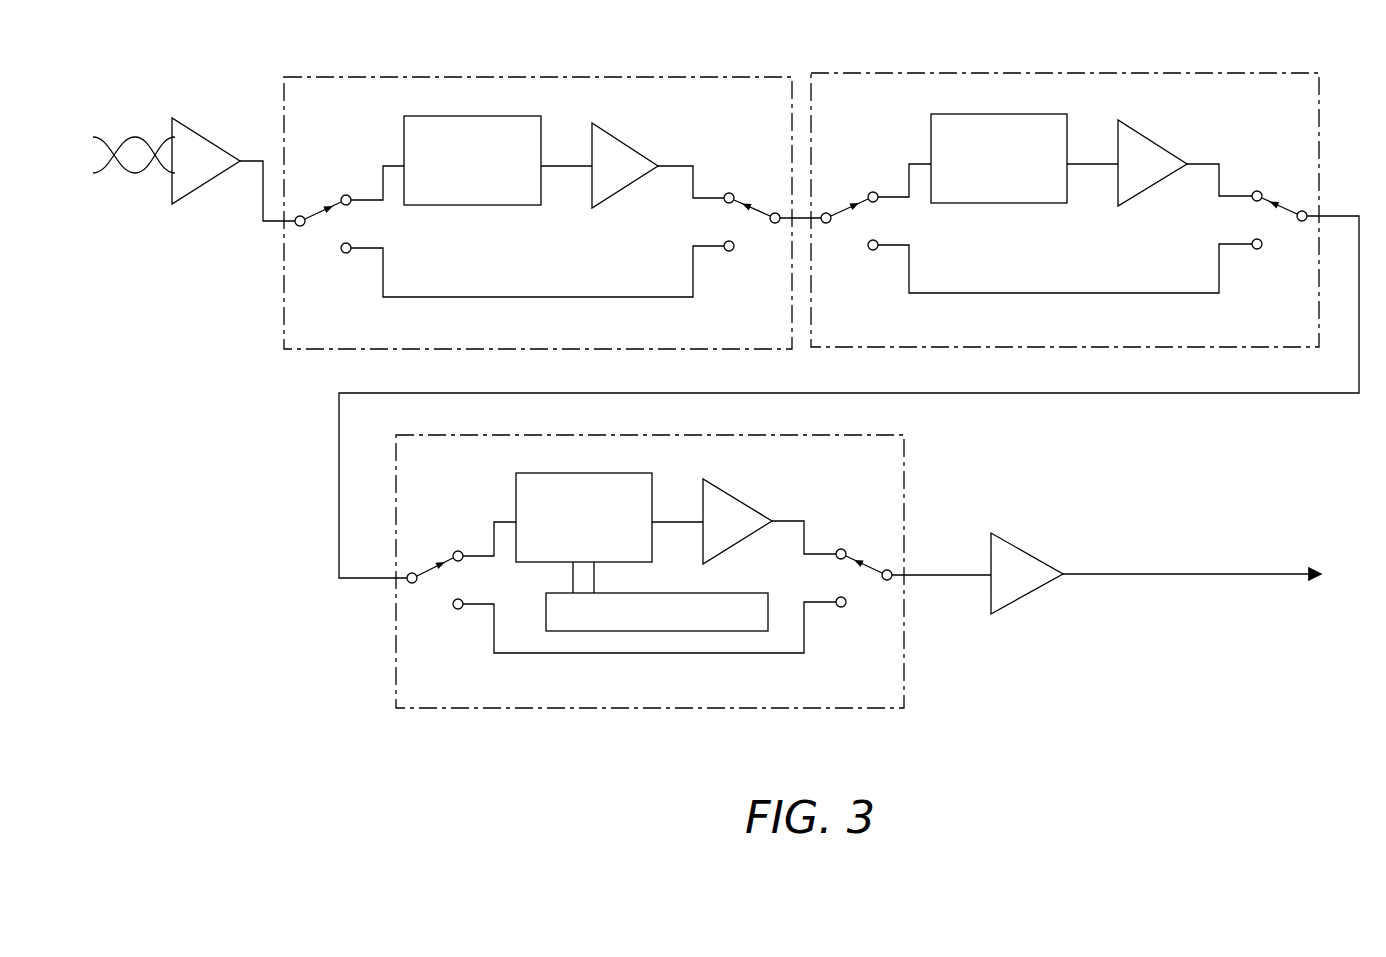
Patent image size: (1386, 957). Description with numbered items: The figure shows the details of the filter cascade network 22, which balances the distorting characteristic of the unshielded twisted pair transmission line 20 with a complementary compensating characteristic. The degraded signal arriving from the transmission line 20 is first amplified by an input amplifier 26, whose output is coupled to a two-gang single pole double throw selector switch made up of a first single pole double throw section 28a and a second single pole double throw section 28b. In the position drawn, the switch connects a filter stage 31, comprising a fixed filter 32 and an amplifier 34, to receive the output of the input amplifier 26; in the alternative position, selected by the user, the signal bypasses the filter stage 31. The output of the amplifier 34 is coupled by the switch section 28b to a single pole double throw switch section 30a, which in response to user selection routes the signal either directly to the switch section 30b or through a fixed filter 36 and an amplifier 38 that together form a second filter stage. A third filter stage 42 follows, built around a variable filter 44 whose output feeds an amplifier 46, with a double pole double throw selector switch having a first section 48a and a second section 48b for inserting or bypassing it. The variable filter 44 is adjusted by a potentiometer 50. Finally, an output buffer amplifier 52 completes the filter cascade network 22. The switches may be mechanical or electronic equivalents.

The unshielded twisted pair transmission line 20 is at (118, 113).
The input amplifier 26 is at (196, 116).
The filter stage 31 is at (320, 62).
The first single pole double throw section 28a is at (307, 258).
The second single pole double throw section 28b is at (768, 262).
The fixed filter 32 is at (462, 218).
The amplifier 34 is at (657, 144).
The filter cascade network 22 is at (846, 58).
The single pole double throw switch section 30a is at (833, 256).
The single pole double throw switch section 30b is at (1295, 260).
The fixed filter 36 is at (990, 218).
The amplifier 38 is at (1183, 143).
The third filter stage 42 is at (440, 718).
The variable filter 44 is at (500, 502).
The amplifier 46 is at (748, 493).
The first section 48a is at (418, 603).
The second section 48b is at (882, 600).
The potentiometer 50 is at (650, 637).
The output buffer amplifier 52 is at (1025, 540).